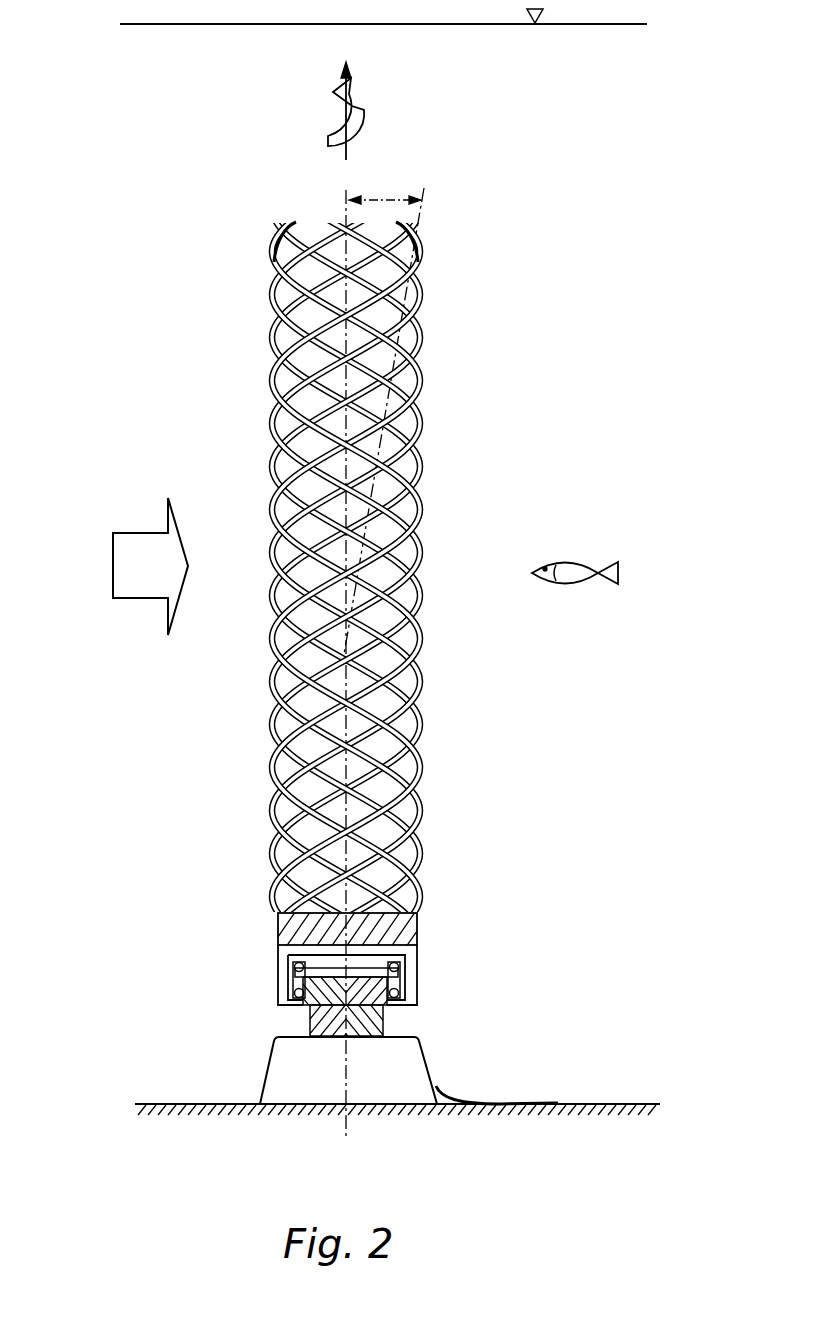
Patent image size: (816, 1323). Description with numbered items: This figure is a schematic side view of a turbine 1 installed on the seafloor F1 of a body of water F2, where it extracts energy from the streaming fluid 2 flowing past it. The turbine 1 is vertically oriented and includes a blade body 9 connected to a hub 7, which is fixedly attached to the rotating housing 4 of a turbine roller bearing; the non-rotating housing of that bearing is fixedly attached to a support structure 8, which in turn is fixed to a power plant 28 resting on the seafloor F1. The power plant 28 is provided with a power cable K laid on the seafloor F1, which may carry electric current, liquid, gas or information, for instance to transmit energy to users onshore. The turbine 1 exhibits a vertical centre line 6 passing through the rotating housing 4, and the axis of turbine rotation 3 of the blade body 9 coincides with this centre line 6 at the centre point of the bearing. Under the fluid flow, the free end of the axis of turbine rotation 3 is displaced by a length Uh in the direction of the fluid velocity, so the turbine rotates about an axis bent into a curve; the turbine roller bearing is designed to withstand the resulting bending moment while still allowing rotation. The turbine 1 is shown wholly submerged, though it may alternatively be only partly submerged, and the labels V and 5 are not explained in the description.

The turbine 1 is at (150, 382).
The streaming fluid 2 is at (123, 566).
The axis of turbine rotation 3 is at (332, 198).
The rotating housing 4 is at (266, 959).
The bearing 5 is at (322, 992).
The vertical centre line 6 is at (333, 1145).
The hub 7 is at (265, 922).
The support structure 8 is at (295, 1027).
The blade body 9 is at (263, 831).
The power plant 28 is at (250, 1072).
The power cable K is at (470, 1091).
The seafloor F1 is at (603, 1098).
The body of water F2 is at (614, 573).
The direction of rotation V is at (324, 111).
The deflection length Uh is at (385, 181).